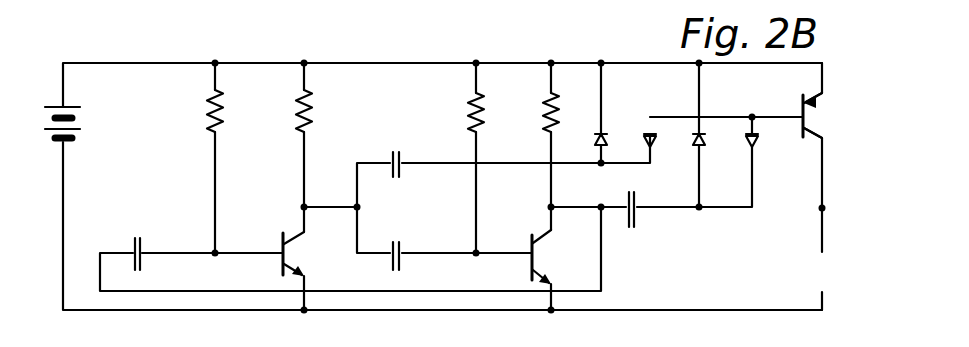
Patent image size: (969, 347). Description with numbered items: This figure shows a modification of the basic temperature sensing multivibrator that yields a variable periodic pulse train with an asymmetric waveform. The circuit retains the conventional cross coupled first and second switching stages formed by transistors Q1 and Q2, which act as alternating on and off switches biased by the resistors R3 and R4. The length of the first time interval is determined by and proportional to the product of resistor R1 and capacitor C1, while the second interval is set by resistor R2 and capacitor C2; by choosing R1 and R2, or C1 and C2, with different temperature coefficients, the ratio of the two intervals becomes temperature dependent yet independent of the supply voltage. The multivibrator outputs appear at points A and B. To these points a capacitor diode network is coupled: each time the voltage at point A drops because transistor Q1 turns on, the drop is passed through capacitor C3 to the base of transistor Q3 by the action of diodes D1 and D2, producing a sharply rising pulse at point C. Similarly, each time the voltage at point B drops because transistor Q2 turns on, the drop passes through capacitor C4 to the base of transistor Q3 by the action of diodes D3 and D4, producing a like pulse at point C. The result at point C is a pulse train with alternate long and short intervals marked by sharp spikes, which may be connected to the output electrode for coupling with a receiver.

The resistor R1 is at (207, 113).
The resistor R2 is at (470, 114).
The biasing resistor R3 is at (296, 114).
The biasing resistor R4 is at (545, 114).
The capacitor C1 is at (136, 226).
The capacitor C2 is at (403, 246).
The capacitor C3 is at (390, 156).
The capacitor C4 is at (632, 229).
The diode D1 is at (657, 138).
The diode D2 is at (612, 139).
The diode D3 is at (706, 138).
The diode D4 is at (759, 138).
The transistor Q1 is at (311, 271).
The transistor Q2 is at (556, 270).
The transistor Q3 is at (800, 115).
The point A is at (298, 204).
The point B is at (545, 206).
The point C is at (829, 207).